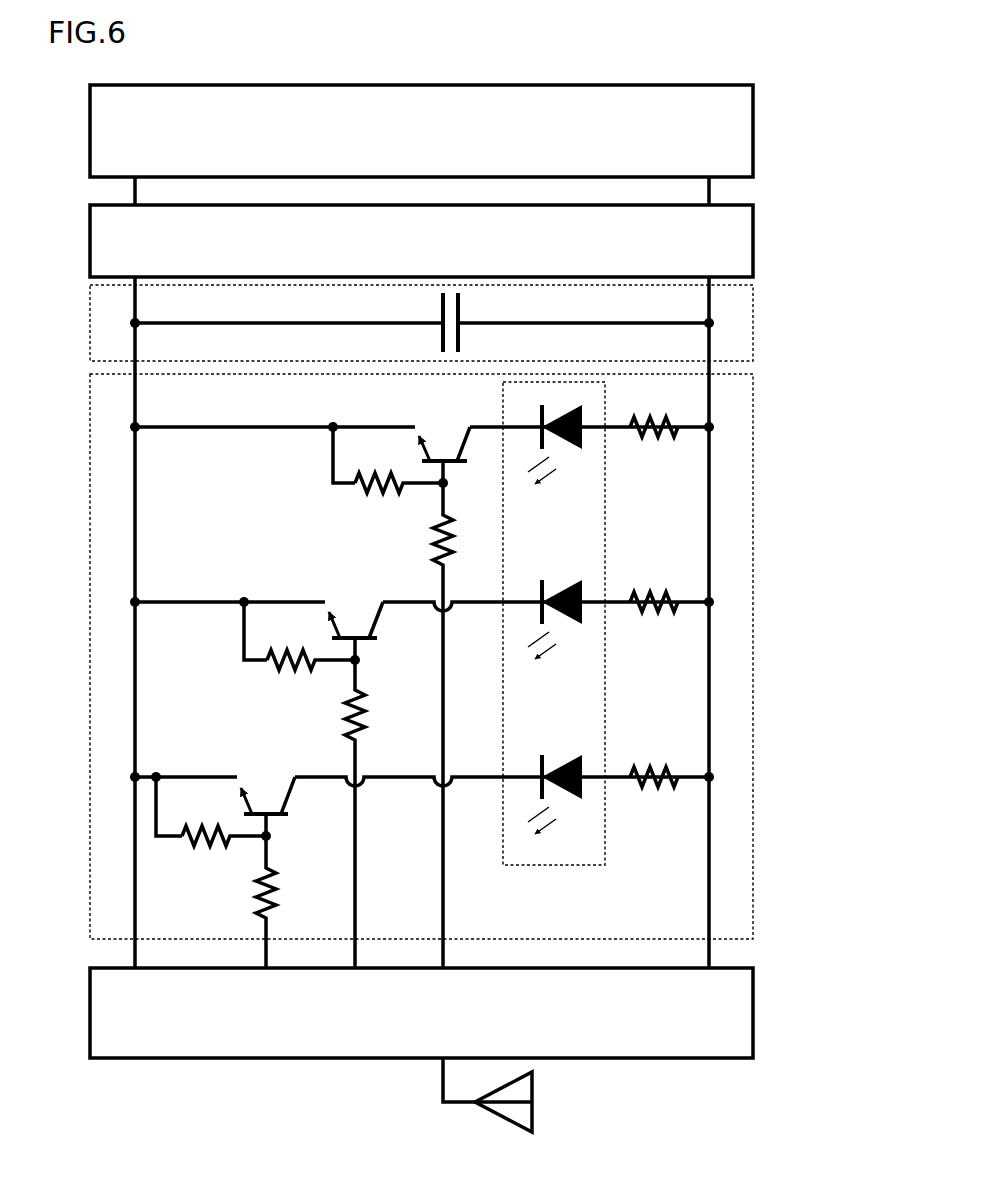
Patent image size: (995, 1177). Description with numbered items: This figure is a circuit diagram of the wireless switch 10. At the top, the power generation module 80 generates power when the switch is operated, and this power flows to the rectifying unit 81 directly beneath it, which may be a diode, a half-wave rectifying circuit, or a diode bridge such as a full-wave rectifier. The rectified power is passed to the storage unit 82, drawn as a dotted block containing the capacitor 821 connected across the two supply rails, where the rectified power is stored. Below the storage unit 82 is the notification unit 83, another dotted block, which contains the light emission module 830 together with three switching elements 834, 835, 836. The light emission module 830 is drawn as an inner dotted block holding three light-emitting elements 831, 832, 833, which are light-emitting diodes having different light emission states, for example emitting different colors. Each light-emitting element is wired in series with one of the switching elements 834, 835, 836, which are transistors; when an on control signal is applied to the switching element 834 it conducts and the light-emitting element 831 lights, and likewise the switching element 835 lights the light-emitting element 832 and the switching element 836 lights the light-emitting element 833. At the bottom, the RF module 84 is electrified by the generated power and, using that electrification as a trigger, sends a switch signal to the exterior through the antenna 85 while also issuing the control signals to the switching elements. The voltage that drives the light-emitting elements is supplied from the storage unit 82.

The wireless switch 10 is at (824, 1070).
The power generation module 80 is at (755, 152).
The rectifying unit 81 is at (755, 248).
The storage unit 82 is at (755, 325).
The capacitor 821 is at (428, 341).
The notification unit 83 is at (755, 900).
The light emission module 830 is at (606, 866).
The light-emitting element 831 is at (574, 455).
The light-emitting element 832 is at (574, 630).
The light-emitting element 833 is at (553, 753).
The switching element 834 is at (466, 472).
The switching element 835 is at (384, 627).
The switching element 836 is at (298, 810).
The RF module 84 is at (755, 1040).
The antenna 85 is at (533, 1114).